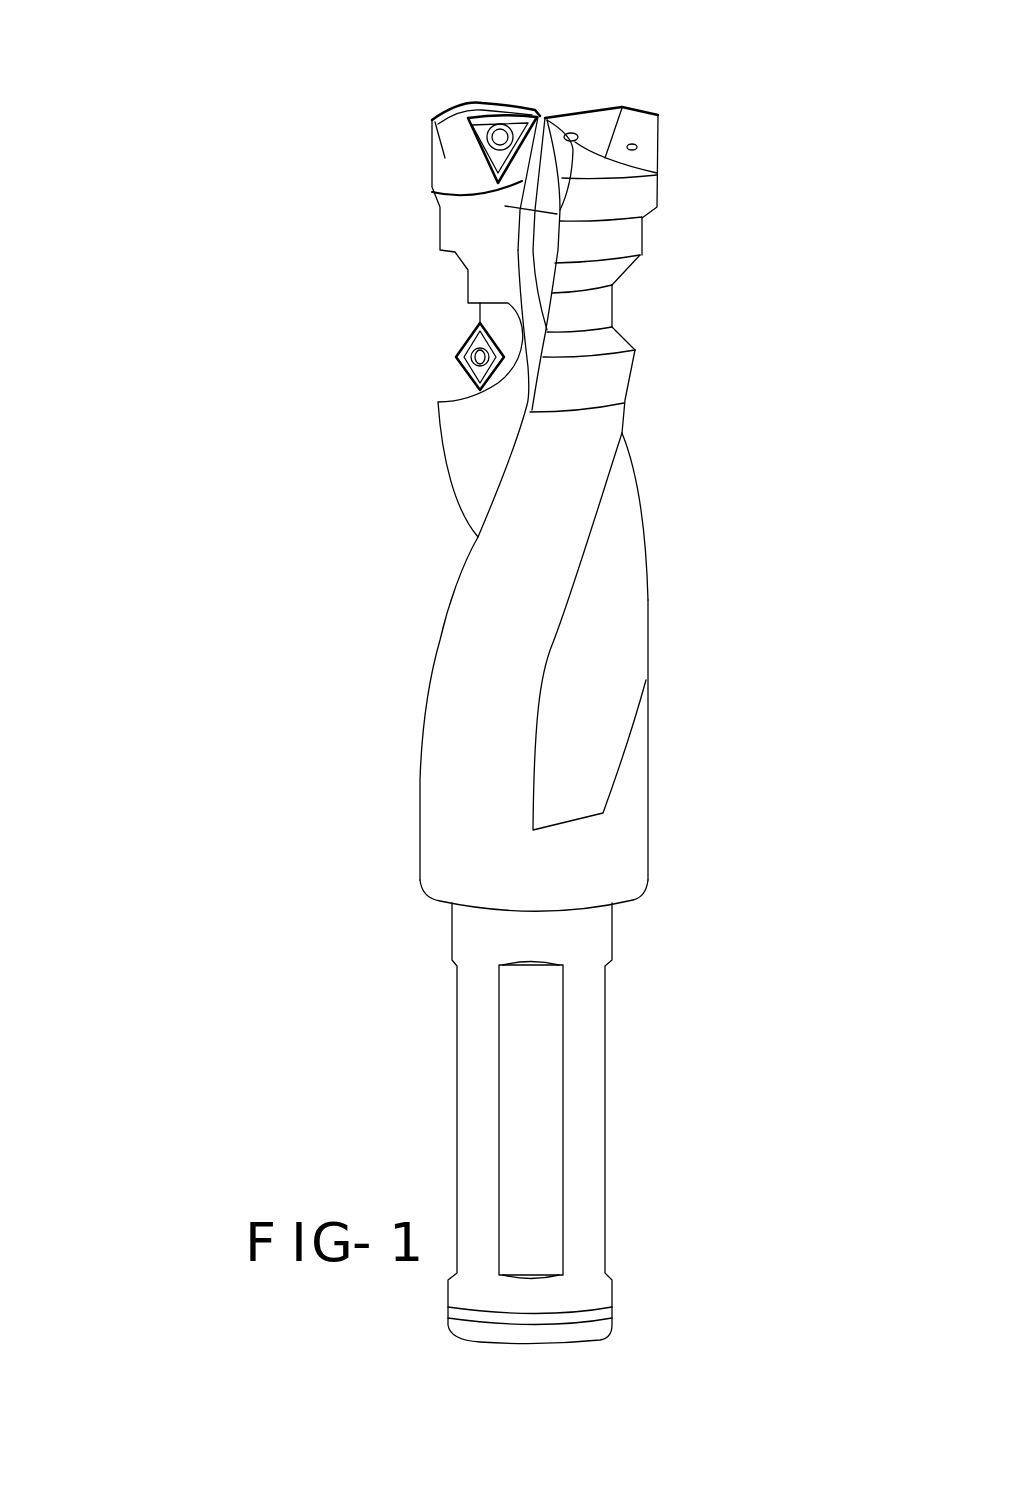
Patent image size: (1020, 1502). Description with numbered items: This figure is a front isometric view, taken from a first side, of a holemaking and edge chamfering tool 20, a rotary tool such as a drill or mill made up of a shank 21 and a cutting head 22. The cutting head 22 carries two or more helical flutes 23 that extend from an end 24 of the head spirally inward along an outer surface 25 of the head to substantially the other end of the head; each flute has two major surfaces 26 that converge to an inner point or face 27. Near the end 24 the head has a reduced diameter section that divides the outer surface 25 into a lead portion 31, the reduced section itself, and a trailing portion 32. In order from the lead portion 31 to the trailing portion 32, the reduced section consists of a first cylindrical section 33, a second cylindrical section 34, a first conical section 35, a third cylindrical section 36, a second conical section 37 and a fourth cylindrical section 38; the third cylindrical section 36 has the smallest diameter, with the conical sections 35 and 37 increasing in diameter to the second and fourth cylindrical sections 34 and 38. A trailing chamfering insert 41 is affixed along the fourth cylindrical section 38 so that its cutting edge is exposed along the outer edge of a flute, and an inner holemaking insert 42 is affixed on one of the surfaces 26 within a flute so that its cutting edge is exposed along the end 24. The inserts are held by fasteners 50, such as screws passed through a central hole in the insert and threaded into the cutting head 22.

The tool 20 is at (302, 330).
The shank 21 is at (605, 1104).
The cutting head 22 is at (453, 592).
The helical flutes 23 is at (460, 427).
The end of the head 24 is at (447, 112).
The outer surface of the head 25 is at (597, 425).
The major surfaces 26 is at (432, 122).
The inner point or face 27 is at (500, 188).
The lead portion 31 is at (660, 120).
The trailing portion 32 is at (648, 800).
The first cylindrical section 33 is at (659, 187).
The second cylindrical section 34 is at (644, 225).
The first conical section 35 is at (624, 272).
The third cylindrical section 36 is at (613, 305).
The second conical section 37 is at (622, 340).
The fourth cylindrical section 38 is at (630, 372).
The trailing chamfering insert 41 is at (475, 335).
The inner holemaking insert 42 is at (505, 126).
The fasteners 50 is at (503, 117).